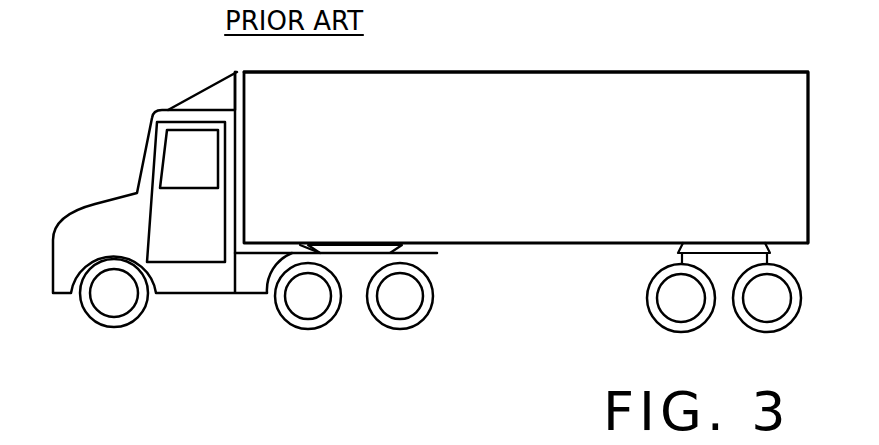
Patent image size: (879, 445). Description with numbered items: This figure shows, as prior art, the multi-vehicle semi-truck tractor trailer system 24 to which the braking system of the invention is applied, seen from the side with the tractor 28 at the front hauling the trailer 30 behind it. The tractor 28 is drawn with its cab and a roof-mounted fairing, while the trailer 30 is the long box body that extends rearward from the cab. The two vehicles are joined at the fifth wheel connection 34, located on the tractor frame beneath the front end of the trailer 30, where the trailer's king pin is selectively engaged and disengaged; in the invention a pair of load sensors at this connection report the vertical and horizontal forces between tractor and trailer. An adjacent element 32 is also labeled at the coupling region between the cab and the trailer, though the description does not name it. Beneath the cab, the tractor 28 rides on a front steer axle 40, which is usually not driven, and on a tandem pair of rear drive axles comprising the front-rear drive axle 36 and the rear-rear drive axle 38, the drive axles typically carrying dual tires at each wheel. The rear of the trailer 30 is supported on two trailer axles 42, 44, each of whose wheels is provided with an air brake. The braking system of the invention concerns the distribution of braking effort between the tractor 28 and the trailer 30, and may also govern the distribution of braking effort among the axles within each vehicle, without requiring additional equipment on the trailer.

The semi-truck tractor trailer system 24 is at (490, 66).
The tractor 28 is at (171, 93).
The trailer 30 is at (664, 106).
The fifth wheel coupling 32 is at (353, 226).
The fifth wheel connection 34 is at (308, 250).
The front-rear drive axle 36 is at (295, 328).
The rear-rear drive axle 38 is at (410, 328).
The front steer axle 40 is at (128, 325).
The trailer axle 42 is at (648, 313).
The trailer axle 44 is at (740, 322).